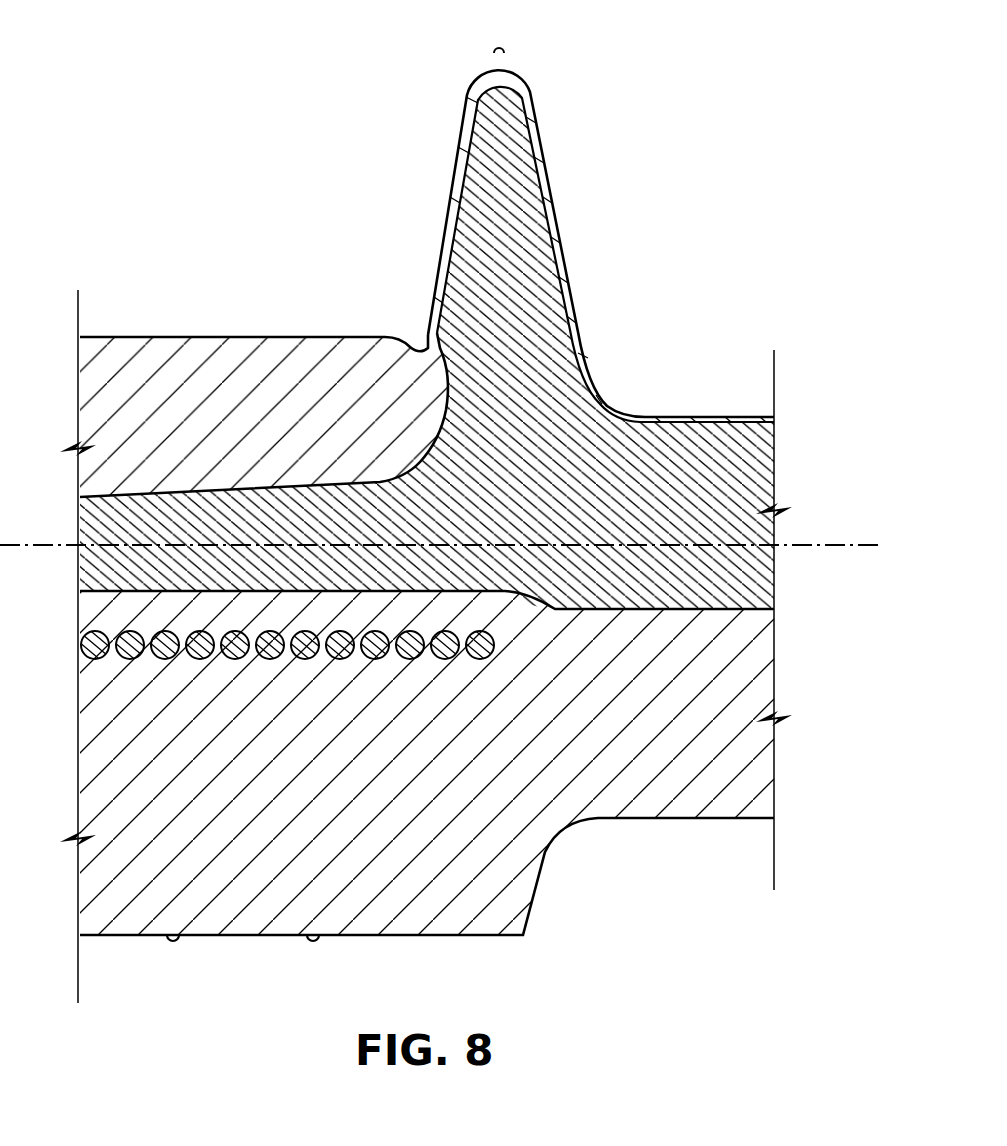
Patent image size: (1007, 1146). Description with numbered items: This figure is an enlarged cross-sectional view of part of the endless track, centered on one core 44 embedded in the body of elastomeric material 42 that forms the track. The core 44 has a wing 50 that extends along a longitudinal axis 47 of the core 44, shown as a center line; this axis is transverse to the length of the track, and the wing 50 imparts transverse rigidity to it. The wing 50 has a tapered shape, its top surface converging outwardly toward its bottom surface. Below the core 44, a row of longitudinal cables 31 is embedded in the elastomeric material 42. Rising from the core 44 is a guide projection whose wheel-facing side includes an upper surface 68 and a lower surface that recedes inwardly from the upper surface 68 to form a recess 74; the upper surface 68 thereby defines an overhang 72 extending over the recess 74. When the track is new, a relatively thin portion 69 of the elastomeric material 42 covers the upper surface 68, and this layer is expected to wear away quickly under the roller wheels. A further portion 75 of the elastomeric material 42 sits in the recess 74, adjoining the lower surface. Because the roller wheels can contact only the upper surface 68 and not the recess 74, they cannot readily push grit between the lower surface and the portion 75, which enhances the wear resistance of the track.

The core 44 is at (163, 76).
The elastomeric material 42 is at (209, 375).
The wing 50 is at (95, 571).
The longitudinal cables 31 is at (130, 648).
The upper surface 68 is at (466, 158).
The portion of elastomeric material 69 is at (462, 130).
The overhang 72 is at (425, 335).
The recess 74 is at (435, 352).
The portion of elastomeric material 75 is at (435, 385).
The longitudinal axis 47 is at (858, 545).